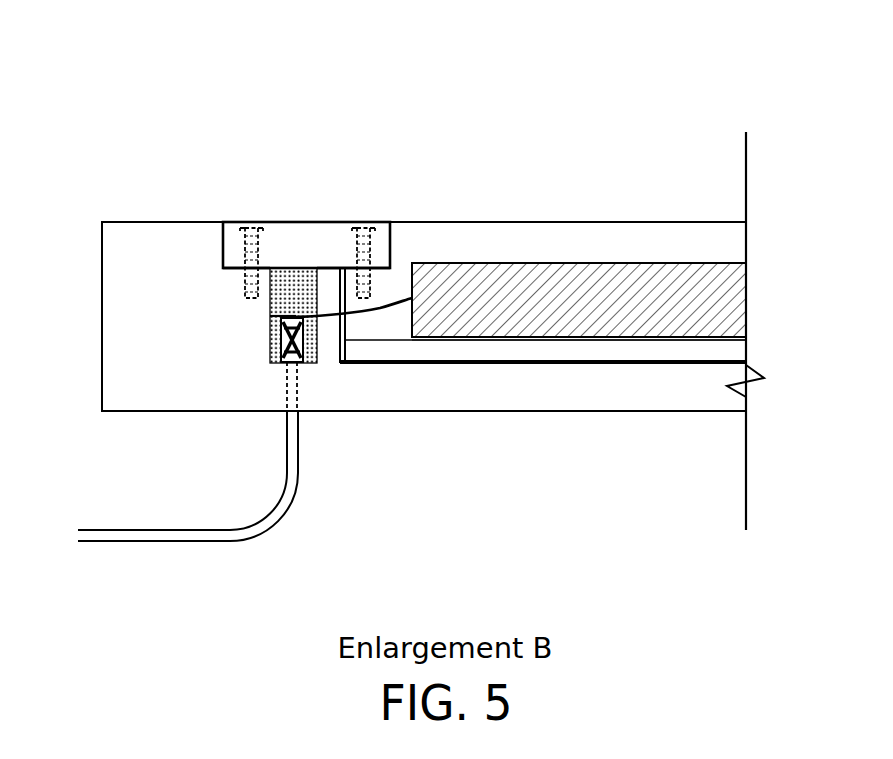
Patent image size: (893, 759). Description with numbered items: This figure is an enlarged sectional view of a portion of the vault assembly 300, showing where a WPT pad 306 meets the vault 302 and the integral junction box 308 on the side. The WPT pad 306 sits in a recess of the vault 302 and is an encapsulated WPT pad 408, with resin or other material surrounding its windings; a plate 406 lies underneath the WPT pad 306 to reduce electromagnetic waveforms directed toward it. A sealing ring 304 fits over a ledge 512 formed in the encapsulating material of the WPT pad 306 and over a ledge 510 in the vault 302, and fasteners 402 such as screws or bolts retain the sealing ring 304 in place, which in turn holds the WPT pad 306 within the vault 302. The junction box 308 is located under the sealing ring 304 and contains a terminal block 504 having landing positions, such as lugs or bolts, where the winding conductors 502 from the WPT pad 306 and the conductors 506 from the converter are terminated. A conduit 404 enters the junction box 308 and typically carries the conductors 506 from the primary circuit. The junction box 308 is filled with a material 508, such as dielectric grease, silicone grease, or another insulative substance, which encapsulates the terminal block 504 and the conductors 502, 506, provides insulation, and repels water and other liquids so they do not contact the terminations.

The vault assembly 300 is at (114, 71).
The vault 302 is at (660, 420).
The sealing ring 304 is at (335, 221).
The WPT pad 306 is at (556, 262).
The junction box 308 is at (266, 318).
The fasteners 402 is at (245, 221).
The conduit 404 is at (203, 544).
The plate 406 is at (453, 352).
The encapsulated WPT pad 408 is at (640, 221).
The winding conductors 502 is at (361, 311).
The terminal block 504 is at (281, 337).
The conductors 506 is at (284, 360).
The material 508 is at (290, 288).
The ledge 510 is at (236, 271).
The ledge 512 is at (379, 278).